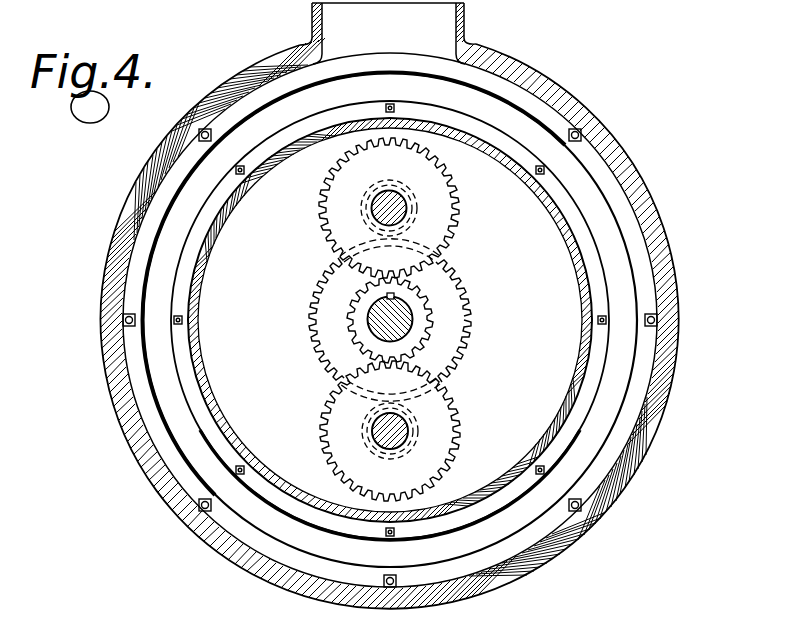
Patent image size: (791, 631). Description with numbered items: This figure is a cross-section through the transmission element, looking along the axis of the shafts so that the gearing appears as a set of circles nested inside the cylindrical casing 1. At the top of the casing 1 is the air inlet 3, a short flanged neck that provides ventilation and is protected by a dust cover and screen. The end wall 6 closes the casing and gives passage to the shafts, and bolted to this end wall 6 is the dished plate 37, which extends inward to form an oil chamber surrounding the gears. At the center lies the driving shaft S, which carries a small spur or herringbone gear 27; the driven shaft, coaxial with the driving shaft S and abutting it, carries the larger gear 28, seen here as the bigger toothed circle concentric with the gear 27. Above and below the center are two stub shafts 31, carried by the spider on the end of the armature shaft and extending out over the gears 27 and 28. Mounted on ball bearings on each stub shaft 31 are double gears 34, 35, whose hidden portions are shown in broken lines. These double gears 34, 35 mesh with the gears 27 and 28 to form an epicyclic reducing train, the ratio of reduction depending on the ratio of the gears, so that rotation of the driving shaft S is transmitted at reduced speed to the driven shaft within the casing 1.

The cylindrical casing 1 is at (598, 518).
The air inlet 3 is at (445, 23).
The end wall 6 is at (598, 428).
The small spur or herringbone gear 27 is at (362, 333).
The larger gear 28 is at (312, 315).
The stub shaft 31 is at (372, 203).
The double gear 34 is at (442, 200).
The double gear 35 is at (366, 220).
The dished plate 37 is at (550, 203).
The driving shaft S is at (410, 310).